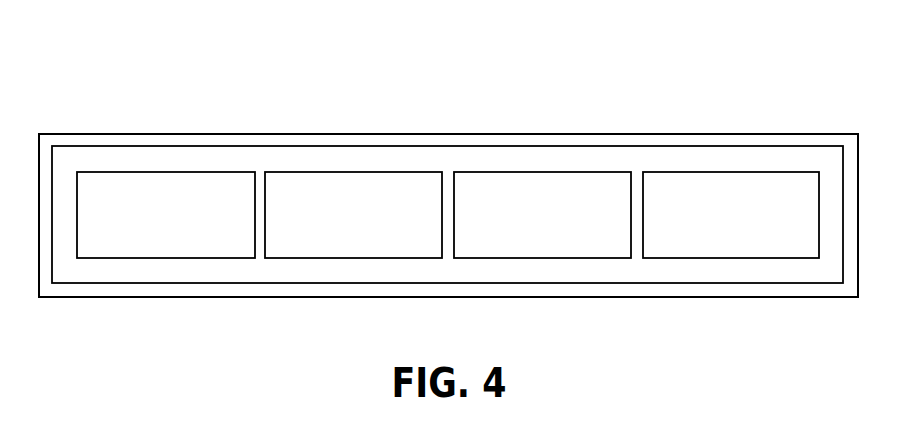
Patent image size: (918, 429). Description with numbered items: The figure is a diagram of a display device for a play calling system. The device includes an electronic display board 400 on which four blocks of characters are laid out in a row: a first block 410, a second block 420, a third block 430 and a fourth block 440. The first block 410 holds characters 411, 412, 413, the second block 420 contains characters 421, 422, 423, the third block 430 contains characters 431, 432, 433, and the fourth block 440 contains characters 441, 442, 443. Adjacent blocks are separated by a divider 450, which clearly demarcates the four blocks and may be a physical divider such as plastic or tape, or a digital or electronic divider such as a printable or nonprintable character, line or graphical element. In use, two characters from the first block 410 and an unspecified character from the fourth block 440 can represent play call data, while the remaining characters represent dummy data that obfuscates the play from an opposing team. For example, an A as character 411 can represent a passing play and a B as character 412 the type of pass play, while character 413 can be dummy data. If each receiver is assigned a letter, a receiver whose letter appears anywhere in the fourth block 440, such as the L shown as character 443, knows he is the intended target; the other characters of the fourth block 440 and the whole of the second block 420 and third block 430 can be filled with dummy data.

The electronic display board 400 is at (848, 290).
The first block 410 is at (166, 215).
The character 411 is at (113, 183).
The character 412 is at (163, 183).
The character 413 is at (218, 183).
The second block 420 is at (353, 215).
The character 421 is at (300, 183).
The character 422 is at (352, 183).
The character 423 is at (402, 183).
The third block 430 is at (542, 215).
The character 431 is at (503, 183).
The character 432 is at (553, 183).
The character 433 is at (598, 183).
The fourth block 440 is at (731, 215).
The character 441 is at (685, 183).
The character 442 is at (728, 183).
The character 443 is at (780, 183).
The divider 450 is at (259, 183).